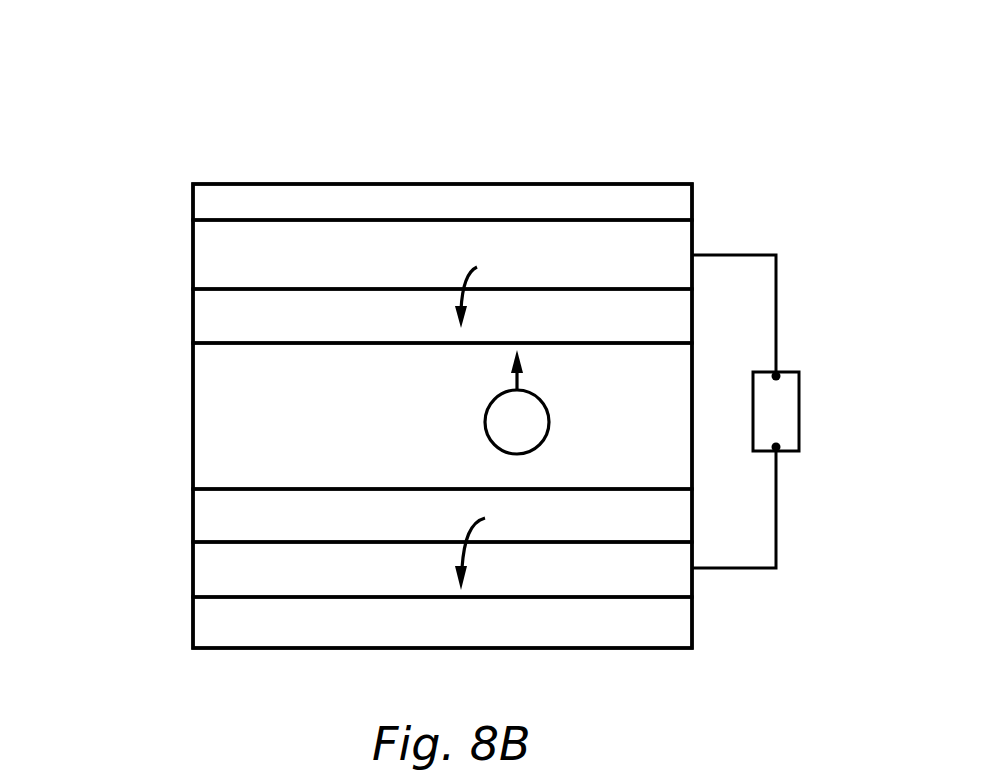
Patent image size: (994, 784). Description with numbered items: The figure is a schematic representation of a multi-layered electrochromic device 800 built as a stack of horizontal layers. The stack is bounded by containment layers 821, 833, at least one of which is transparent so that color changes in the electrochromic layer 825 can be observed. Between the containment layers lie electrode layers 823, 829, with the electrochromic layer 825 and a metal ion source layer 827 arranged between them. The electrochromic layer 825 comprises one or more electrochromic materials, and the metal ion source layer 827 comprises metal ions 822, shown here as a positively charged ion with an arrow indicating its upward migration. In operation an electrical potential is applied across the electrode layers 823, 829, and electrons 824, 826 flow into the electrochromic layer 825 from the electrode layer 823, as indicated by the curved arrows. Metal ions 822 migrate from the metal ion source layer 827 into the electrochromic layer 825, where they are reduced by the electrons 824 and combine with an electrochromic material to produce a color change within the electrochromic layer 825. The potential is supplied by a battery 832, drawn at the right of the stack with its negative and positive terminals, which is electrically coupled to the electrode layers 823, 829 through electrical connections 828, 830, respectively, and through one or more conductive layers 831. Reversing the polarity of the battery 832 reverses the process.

The multi-layered electrochromic device 800 is at (131, 113).
The containment layer 821 is at (193, 200).
The electrode layer 823 is at (193, 250).
The electrochromic layer 825 is at (193, 312).
The metal ion source layer 827 is at (193, 417).
The electrode layer 829 is at (193, 517).
The conductive layer 831 is at (193, 567).
The containment layer 833 is at (193, 617).
The metal ions 822 is at (549, 420).
The electrons 824 is at (484, 267).
The electrons 826 is at (458, 563).
The electrical connection 828 is at (776, 312).
The electrical connection 830 is at (776, 503).
The battery 832 is at (799, 406).